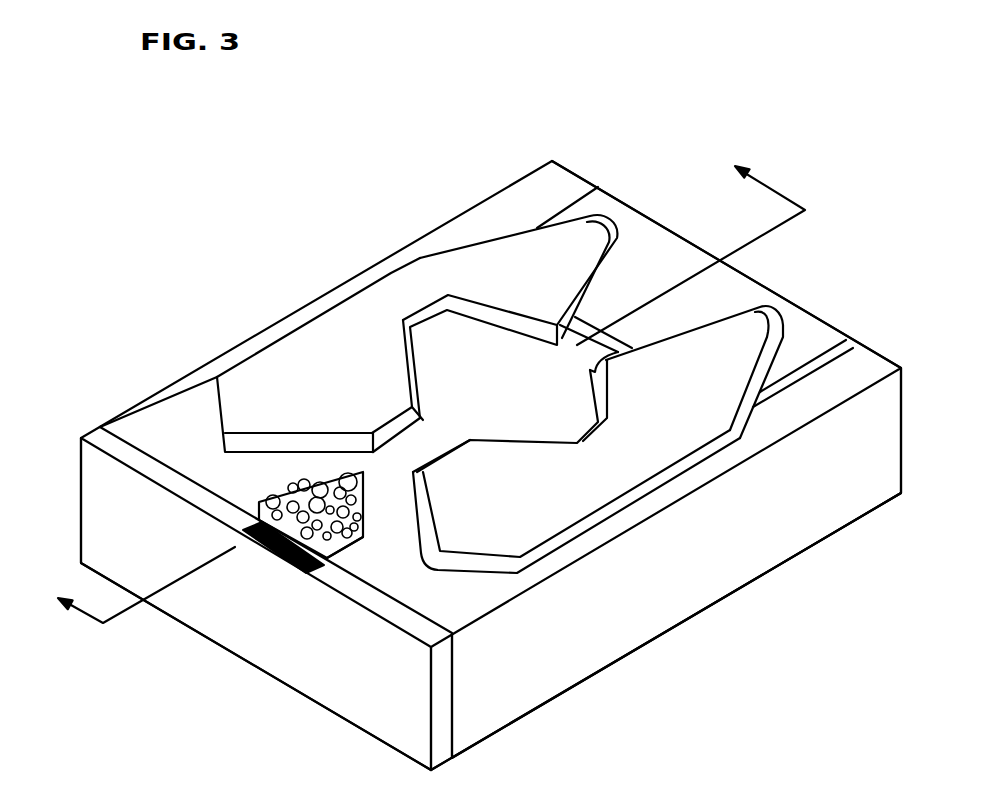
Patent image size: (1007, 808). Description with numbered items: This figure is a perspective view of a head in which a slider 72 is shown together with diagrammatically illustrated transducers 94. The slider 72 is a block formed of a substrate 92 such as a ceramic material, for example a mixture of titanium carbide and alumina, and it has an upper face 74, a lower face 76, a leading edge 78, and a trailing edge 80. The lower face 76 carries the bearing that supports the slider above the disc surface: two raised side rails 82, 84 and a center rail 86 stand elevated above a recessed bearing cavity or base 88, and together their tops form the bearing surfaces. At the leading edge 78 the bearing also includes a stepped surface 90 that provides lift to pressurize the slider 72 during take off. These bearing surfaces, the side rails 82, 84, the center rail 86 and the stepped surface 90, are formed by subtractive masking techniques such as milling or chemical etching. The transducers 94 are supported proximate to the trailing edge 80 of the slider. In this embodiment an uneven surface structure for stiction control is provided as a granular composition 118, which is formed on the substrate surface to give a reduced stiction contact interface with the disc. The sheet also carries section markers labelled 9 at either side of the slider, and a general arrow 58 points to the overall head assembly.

The housing 58 is at (438, 198).
The slider 72 is at (648, 220).
The upper face 74 is at (618, 663).
The lower face 76 is at (768, 330).
The leading edge 78 is at (832, 325).
The trailing edge 80 is at (288, 608).
The side rail 82 is at (346, 390).
The side rail 84 is at (567, 502).
The center rail 86 is at (363, 493).
The recessed bearing cavity 88 is at (522, 397).
The stepped surface 90 is at (657, 290).
The substrate 92 is at (805, 523).
The transducers 94 is at (247, 539).
The granular composition 118 is at (363, 530).
The section line 9- 9 is at (415, 387).